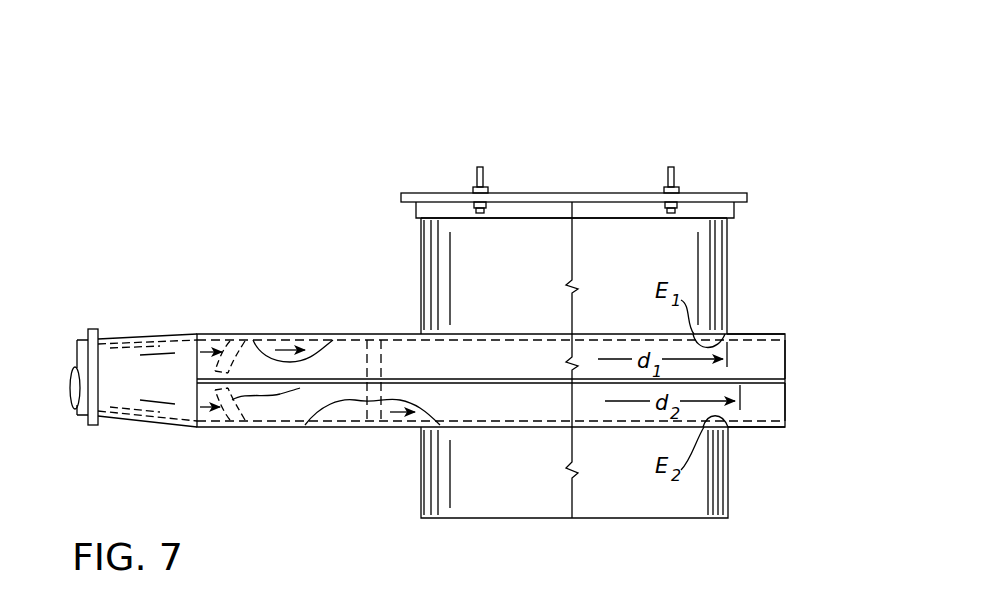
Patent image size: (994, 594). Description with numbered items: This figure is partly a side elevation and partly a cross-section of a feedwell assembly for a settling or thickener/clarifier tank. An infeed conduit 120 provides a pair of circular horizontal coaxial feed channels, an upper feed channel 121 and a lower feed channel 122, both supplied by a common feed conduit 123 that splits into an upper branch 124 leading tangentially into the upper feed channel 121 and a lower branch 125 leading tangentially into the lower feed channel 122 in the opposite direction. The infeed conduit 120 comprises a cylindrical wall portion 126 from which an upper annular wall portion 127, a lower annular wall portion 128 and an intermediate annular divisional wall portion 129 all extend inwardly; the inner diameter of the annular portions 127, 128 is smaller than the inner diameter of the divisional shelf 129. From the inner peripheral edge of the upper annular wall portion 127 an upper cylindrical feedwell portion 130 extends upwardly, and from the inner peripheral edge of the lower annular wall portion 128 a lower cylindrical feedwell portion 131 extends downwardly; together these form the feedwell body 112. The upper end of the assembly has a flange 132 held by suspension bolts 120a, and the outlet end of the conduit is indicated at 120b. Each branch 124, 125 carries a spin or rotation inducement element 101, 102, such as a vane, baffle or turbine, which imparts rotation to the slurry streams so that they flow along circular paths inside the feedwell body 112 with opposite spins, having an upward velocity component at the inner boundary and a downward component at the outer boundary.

The spin or rotation inducement element 101 is at (222, 338).
The spin or rotation inducement element 102 is at (225, 428).
The feedwell body 112 is at (418, 240).
The infeed conduit 120 is at (395, 312).
The suspension bolts 120a is at (711, 147).
The duct outlet end 120b is at (788, 346).
The upper feed channel 121 is at (770, 334).
The lower feed channel 122 is at (762, 413).
The common feed conduit 123 is at (157, 337).
The upper branch 124 is at (303, 340).
The lower branch 125 is at (293, 428).
The cylindrical wall portion 126 is at (786, 410).
The upper annular wall portion 127 is at (740, 334).
The lower annular wall portion 128 is at (740, 428).
The intermediate annular divisional wall portion 129 is at (746, 379).
The upper cylindrical feedwell portion 130 is at (730, 232).
The lower cylindrical feedwell portion 131 is at (729, 493).
The flange 132 is at (736, 193).